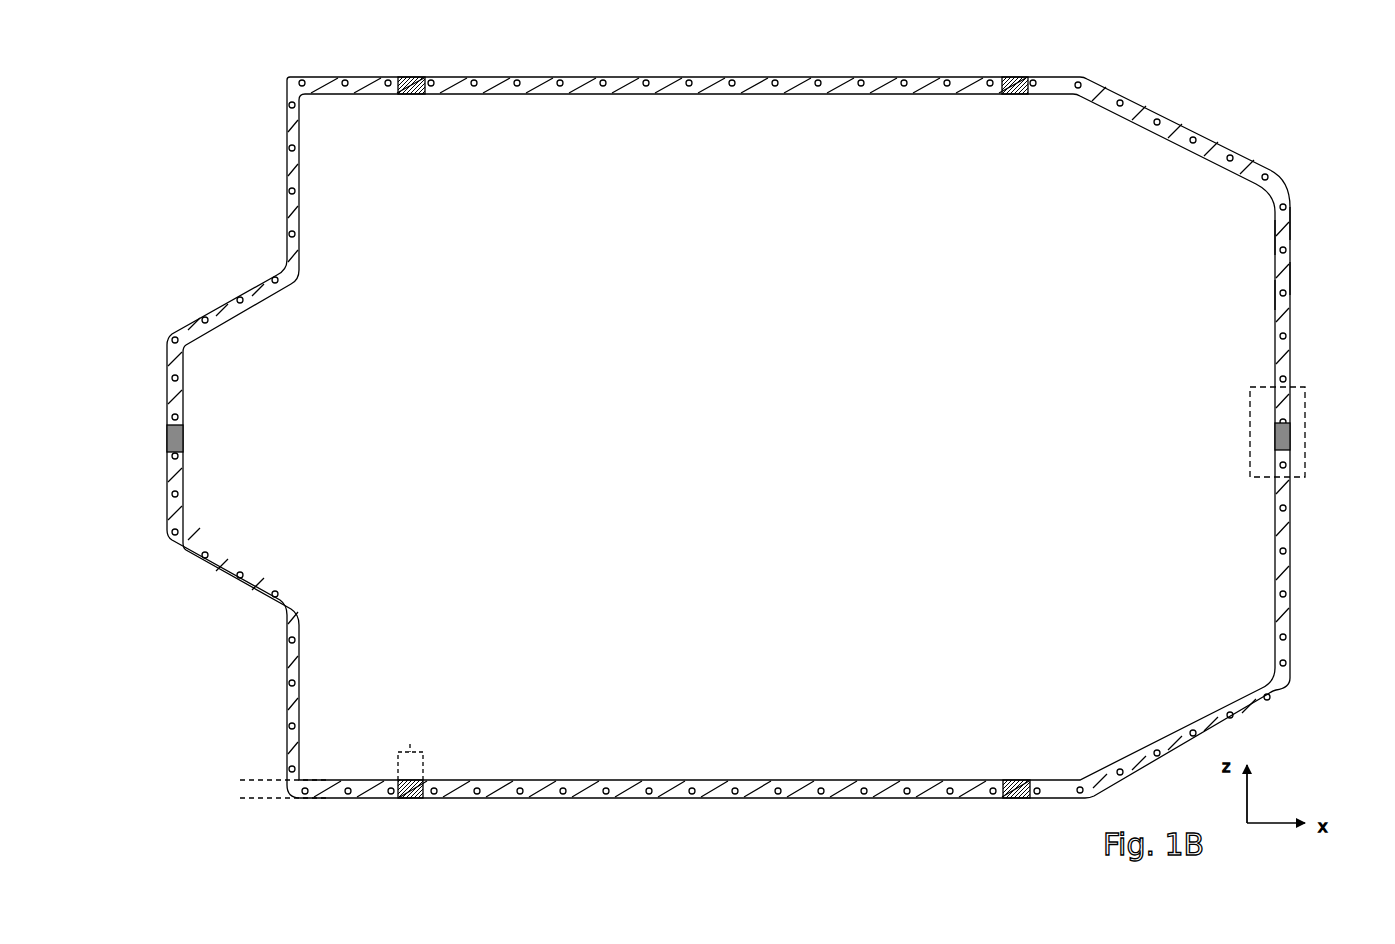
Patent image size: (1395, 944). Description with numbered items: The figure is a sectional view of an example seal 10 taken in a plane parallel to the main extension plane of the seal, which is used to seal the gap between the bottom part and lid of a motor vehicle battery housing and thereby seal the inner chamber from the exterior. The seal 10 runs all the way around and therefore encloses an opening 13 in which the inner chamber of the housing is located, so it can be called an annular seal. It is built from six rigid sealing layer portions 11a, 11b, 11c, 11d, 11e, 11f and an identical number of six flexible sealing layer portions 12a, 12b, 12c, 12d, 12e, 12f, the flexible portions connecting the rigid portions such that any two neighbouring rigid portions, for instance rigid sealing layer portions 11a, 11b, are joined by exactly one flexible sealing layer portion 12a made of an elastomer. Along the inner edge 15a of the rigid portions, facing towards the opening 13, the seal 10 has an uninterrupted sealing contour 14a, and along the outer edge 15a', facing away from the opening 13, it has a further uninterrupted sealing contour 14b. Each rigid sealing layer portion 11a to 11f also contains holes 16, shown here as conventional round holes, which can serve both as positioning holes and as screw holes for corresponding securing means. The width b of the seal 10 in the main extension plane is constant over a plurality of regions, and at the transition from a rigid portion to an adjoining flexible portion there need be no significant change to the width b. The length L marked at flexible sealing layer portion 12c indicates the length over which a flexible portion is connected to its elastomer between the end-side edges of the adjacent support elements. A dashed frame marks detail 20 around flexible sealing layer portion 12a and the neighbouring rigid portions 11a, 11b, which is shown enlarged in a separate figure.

The seal 10 is at (1147, 107).
The rigid sealing layer portion 11a is at (1283, 325).
The rigid sealing layer portion 11b is at (1283, 517).
The rigid sealing layer portion 11c is at (790, 800).
The rigid sealing layer portion 11d is at (287, 608).
The rigid sealing layer portion 11e is at (288, 260).
The rigid sealing layer portion 11f is at (655, 88).
The flexible sealing layer portion 12a is at (1285, 437).
The flexible sealing layer portion 12b is at (1020, 800).
The flexible sealing layer portion 12c is at (412, 800).
The flexible sealing layer portion 12d is at (173, 438).
The flexible sealing layer portion 12e is at (414, 77).
The flexible sealing layer portion 12f is at (1012, 77).
The opening 13 is at (714, 455).
The uninterrupted sealing contour 14a is at (1273, 240).
The further uninterrupted sealing contour 14b is at (1292, 221).
The inner edge 15a is at (1238, 295).
The outer edge 15a' is at (1336, 275).
The holes 16 is at (822, 84).
The detail 20 is at (1250, 407).
The length L is at (410, 754).
The width b is at (289, 787).